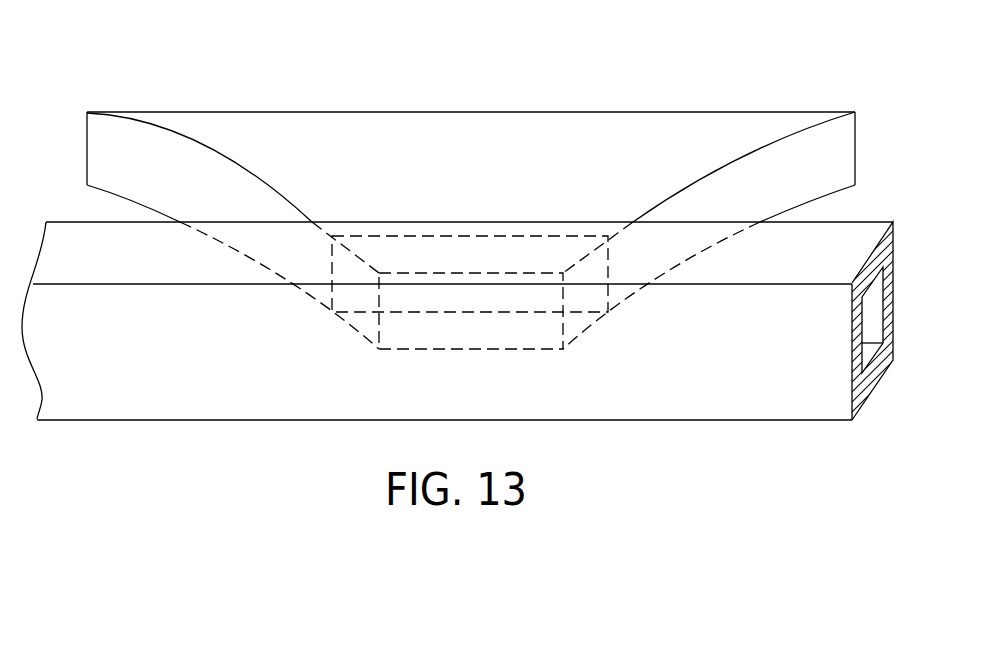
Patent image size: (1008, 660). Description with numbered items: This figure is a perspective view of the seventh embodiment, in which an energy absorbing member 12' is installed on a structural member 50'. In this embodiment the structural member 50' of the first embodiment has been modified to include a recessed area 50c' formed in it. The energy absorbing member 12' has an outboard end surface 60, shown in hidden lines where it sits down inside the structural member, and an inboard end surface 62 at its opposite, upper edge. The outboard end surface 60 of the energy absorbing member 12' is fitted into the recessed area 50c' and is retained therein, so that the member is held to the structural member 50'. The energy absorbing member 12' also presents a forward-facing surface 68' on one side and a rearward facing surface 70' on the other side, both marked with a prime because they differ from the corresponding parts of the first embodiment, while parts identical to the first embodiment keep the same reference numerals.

The energy absorbing member 12' is at (515, 242).
The inboard end surface 62 is at (610, 112).
The forward-facing surface 68' is at (109, 167).
The rearward facing surface 70' is at (831, 167).
The structural member 50' is at (515, 344).
The recessed area 50c' is at (442, 352).
The outboard end surface 60 is at (493, 328).